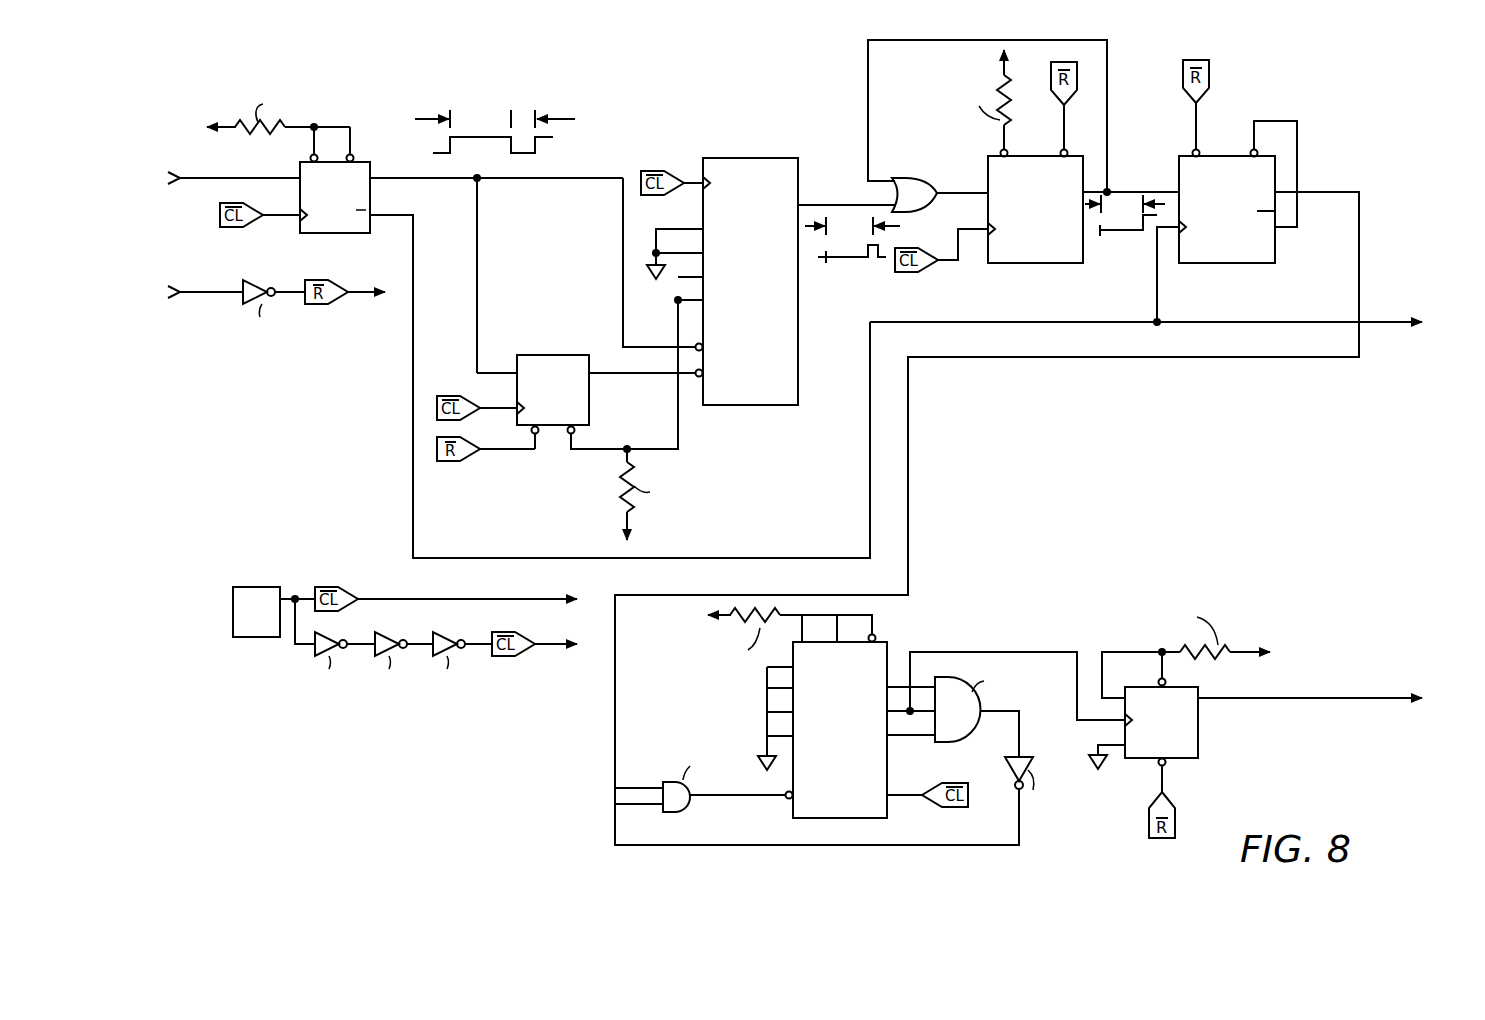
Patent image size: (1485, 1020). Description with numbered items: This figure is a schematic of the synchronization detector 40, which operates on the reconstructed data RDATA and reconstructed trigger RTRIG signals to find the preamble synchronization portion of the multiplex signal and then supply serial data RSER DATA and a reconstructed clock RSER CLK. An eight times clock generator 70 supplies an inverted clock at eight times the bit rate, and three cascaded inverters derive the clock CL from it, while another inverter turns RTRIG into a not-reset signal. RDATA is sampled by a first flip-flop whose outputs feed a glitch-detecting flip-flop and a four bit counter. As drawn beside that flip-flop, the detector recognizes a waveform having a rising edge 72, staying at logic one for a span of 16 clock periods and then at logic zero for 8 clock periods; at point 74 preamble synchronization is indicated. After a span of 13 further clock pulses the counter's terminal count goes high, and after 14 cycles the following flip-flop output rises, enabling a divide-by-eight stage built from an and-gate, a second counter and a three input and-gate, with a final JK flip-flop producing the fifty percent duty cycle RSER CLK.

The synchronization detector 40 is at (452, 765).
The eight times clock generator 70 is at (254, 591).
The rising edge 72 is at (452, 152).
The point of preamble synchronization indication 74 is at (537, 152).
The sixteen clock periods at logic one 16 is at (463, 120).
The eight clock periods at logic zero 8 is at (546, 120).
The thirteen clock period interval 13 is at (852, 226).
The fourteen clock cycle interval 14 is at (1125, 204).